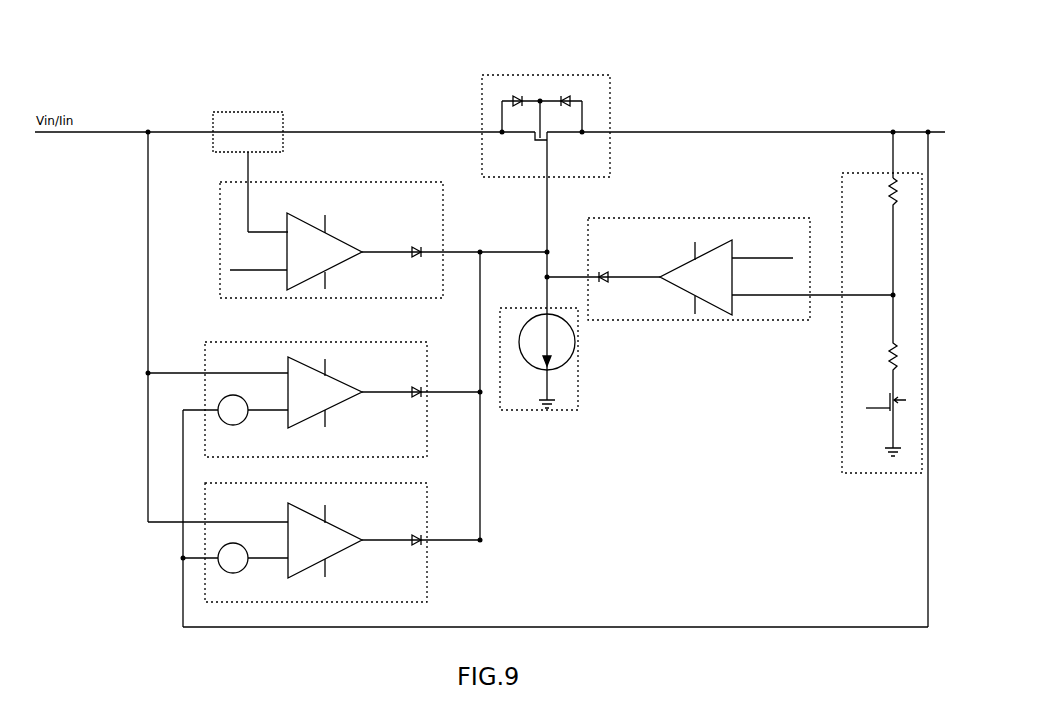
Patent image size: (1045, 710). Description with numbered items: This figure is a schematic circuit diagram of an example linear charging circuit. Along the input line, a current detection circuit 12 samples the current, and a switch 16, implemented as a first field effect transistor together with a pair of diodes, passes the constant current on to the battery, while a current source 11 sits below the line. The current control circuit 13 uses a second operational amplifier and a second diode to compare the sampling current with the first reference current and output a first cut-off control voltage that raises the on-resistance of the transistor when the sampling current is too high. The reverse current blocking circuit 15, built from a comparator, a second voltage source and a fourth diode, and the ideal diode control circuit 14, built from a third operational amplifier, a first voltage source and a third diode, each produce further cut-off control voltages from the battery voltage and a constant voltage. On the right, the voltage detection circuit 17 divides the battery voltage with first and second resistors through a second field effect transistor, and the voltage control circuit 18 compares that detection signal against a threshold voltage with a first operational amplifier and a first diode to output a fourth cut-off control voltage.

The current source 11 is at (580, 390).
The current detection circuit 12 is at (254, 112).
The current control circuit 13 is at (443, 200).
The ideal diode control circuit 14 is at (427, 498).
The reverse current blocking circuit 15 is at (427, 352).
The switch 16 is at (610, 92).
The voltage detection circuit 17 is at (848, 173).
The voltage control circuit 18 is at (745, 218).